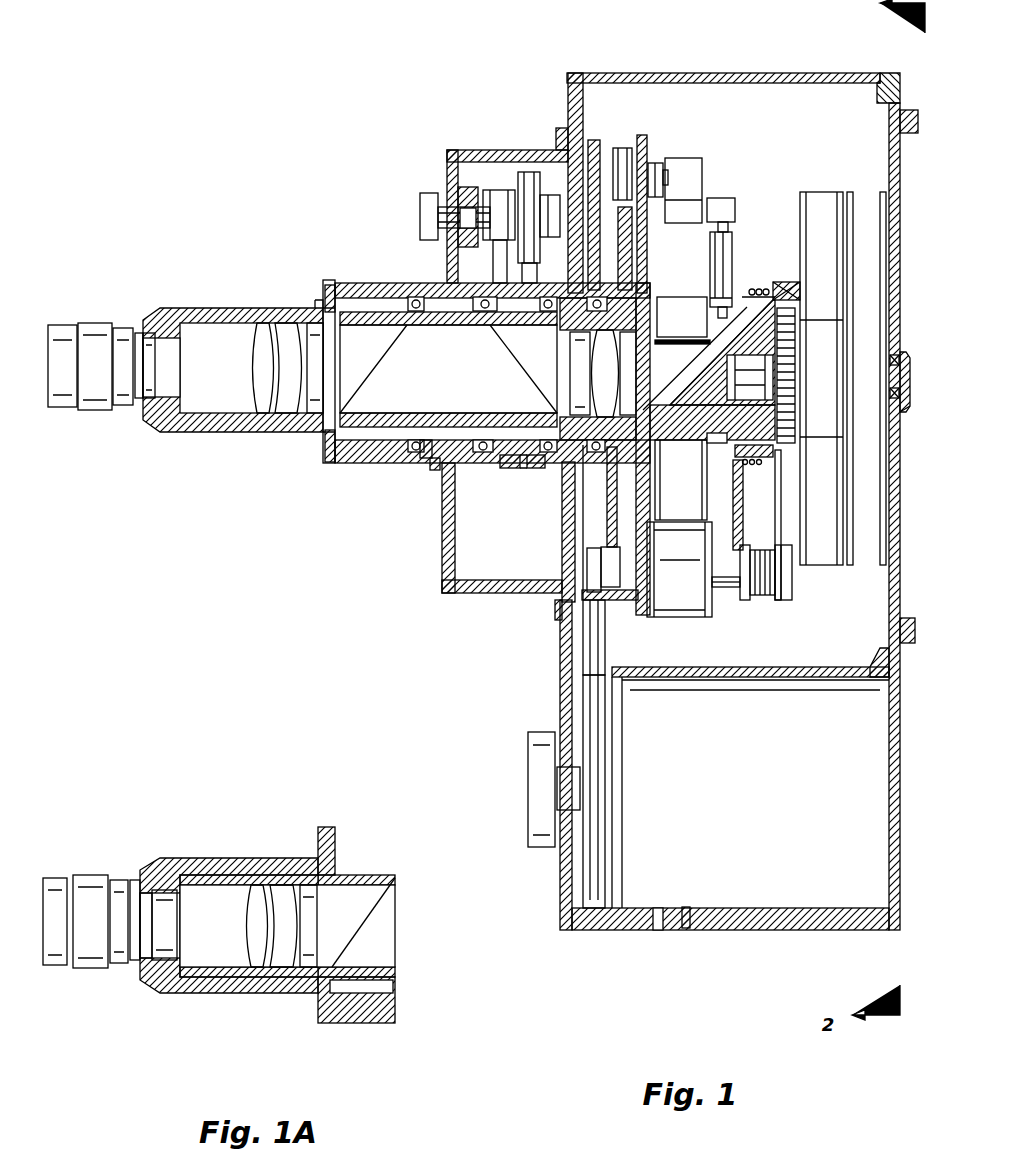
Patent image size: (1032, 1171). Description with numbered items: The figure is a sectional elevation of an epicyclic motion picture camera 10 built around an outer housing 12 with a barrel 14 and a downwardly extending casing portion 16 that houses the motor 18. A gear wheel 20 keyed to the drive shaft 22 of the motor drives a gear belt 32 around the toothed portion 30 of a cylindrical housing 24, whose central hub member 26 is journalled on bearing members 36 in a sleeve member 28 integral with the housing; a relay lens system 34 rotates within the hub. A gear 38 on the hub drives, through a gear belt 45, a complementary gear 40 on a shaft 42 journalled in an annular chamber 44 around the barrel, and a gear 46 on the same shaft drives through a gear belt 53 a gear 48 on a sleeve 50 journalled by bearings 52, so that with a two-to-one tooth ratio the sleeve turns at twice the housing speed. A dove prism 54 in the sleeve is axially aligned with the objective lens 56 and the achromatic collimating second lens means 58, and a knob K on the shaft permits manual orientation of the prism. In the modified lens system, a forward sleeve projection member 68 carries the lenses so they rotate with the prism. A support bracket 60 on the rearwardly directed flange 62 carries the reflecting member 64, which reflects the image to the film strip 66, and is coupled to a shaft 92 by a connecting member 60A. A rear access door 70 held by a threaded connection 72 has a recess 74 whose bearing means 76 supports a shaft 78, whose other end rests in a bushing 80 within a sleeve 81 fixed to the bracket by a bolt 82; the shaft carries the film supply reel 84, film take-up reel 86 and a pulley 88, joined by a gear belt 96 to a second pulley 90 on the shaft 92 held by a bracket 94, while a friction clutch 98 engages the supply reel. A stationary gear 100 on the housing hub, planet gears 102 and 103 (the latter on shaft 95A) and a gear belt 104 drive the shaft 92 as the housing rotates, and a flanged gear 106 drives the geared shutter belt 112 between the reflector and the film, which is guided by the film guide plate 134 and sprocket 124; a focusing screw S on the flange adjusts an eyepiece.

In FIG. 1, the epicyclic motion picture camera 10 is at (458, 622).
In FIG. 1, the outer housing 12 is at (712, 70).
In FIG. 1, the barrel 14 is at (227, 432).
In FIG. 1, the casing portion 16 is at (745, 932).
In FIG. 1, the motor 18 is at (657, 868).
In FIG. 1, the gear wheel 20 is at (590, 872).
In FIG. 1, the drive shaft 22 is at (608, 788).
In FIG. 1, the cylindrical housing 24 is at (620, 600).
In FIG. 1, the central hub member 26 is at (613, 432).
In FIG. 1, the sleeve member 28 is at (590, 282).
In FIG. 1, the toothed portion 30 is at (587, 652).
In FIG. 1, the gear belt 32 is at (590, 665).
In FIG. 1, the relay lens system 34 is at (578, 352).
In FIG. 1, the bearing members 36 is at (553, 285).
In FIG. 1, the gear 38 is at (517, 475).
In FIG. 1, the complementary gear 40 is at (528, 180).
In FIG. 1, the shaft 42 is at (453, 212).
In FIG. 1, the annular chamber 44 is at (468, 168).
In FIG. 1, the gear belt 45 is at (525, 470).
In FIG. 1, the gear 46 is at (503, 202).
In FIG. 1, the gear 48 is at (490, 463).
In FIG. 1, the sleeve 50 is at (347, 462).
In FIG. 1A, the sleeve 50 is at (380, 1023).
In FIG. 1, the bearings 52 is at (470, 285).
In FIG. 1, the gear belt 53 is at (498, 257).
In FIG. 1, the dove prism 54 is at (398, 349).
In FIG. 1A, the dove prism 54 is at (368, 918).
In FIG. 1, the objective lens 56 is at (150, 353).
In FIG. 1A, the objective lens 56 is at (145, 905).
In FIG. 1, the second lens means 58 is at (263, 350).
In FIG. 1A, the second lens means 58 is at (258, 905).
In FIG. 1, the support bracket 60 is at (680, 430).
In FIG. 1, the connecting member 60A is at (740, 535).
In FIG. 1, the rearwardly directed flange 62 is at (636, 502).
In FIG. 1, the reflecting member 64 is at (667, 395).
In FIG. 1, the film strip 66 is at (685, 210).
In FIG. 1A, the sleeve projection member 68 is at (228, 975).
In FIG. 1, the rear access door 70 is at (903, 205).
In FIG. 1, the threaded connection 72 is at (872, 676).
In FIG. 1, the recess or detent 74 is at (907, 354).
In FIG. 1, the bearing means 76 is at (905, 413).
In FIG. 1, the shaft 78 is at (905, 400).
In FIG. 1, the bushing 80 is at (747, 457).
In FIG. 1, the sleeve 81 is at (742, 297).
In FIG. 1, the bolt 82 is at (715, 442).
In FIG. 1, the film supply reel 84 is at (818, 203).
In FIG. 1, the film take-up reel 86 is at (882, 227).
In FIG. 1, the pulley 88 is at (803, 313).
In FIG. 1, the second pulley 90 is at (788, 567).
In FIG. 1, the shaft 92 is at (718, 582).
In FIG. 1, the bracket 94 is at (740, 583).
In FIG. 1, the gear belt 96 is at (787, 517).
In FIG. 1, the friction clutch 98 is at (773, 282).
In FIG. 1, the stationary gear 100 is at (600, 467).
In FIG. 1, the gear 102 is at (533, 595).
In FIG. 1, the gear 103 is at (623, 170).
In FIG. 1, the gear belt 104 is at (613, 520).
In FIG. 1, the flanged gear 106 is at (712, 607).
In FIG. 1, the geared shutter belt 112 is at (740, 503).
In FIG. 1, the sprocket 124 is at (687, 170).
In FIG. 1, the film guide plate 134 is at (688, 343).
In FIG. 1, the shaft 95A is at (648, 175).
In FIG. 1, the knob K is at (430, 203).
In FIG. 1, the focusing screw S is at (725, 203).